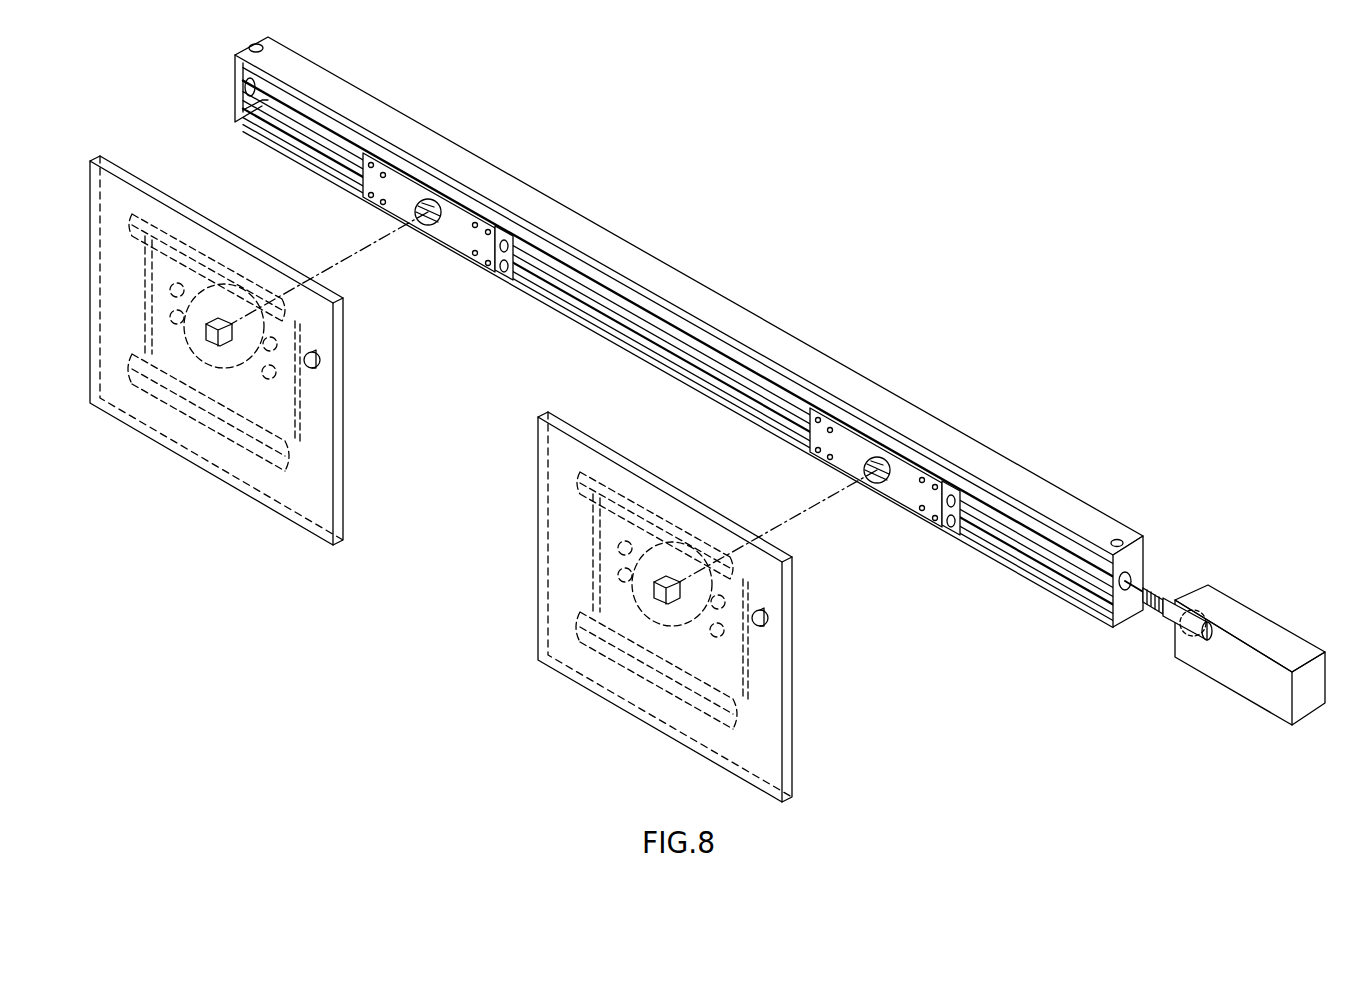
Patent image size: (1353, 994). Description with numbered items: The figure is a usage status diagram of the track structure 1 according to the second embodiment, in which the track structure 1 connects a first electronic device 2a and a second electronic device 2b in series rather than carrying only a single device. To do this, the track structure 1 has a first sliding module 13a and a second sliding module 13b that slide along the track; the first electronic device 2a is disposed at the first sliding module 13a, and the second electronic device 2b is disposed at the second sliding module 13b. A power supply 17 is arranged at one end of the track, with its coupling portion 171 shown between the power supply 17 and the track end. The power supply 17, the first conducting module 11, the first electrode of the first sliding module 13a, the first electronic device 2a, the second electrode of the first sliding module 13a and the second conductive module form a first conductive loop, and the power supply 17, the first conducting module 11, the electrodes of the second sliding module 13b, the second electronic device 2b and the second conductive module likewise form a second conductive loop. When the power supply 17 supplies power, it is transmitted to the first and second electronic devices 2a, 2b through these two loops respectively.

The track structure 1 is at (649, 332).
The first conducting module 11 is at (250, 114).
The first sliding module 13a is at (407, 173).
The second sliding module 13b is at (853, 430).
The first electronic device 2a is at (90, 159).
The second electronic device 2b is at (792, 673).
The power supply 17 is at (1216, 653).
The coupling of drive motor 171 is at (1173, 652).